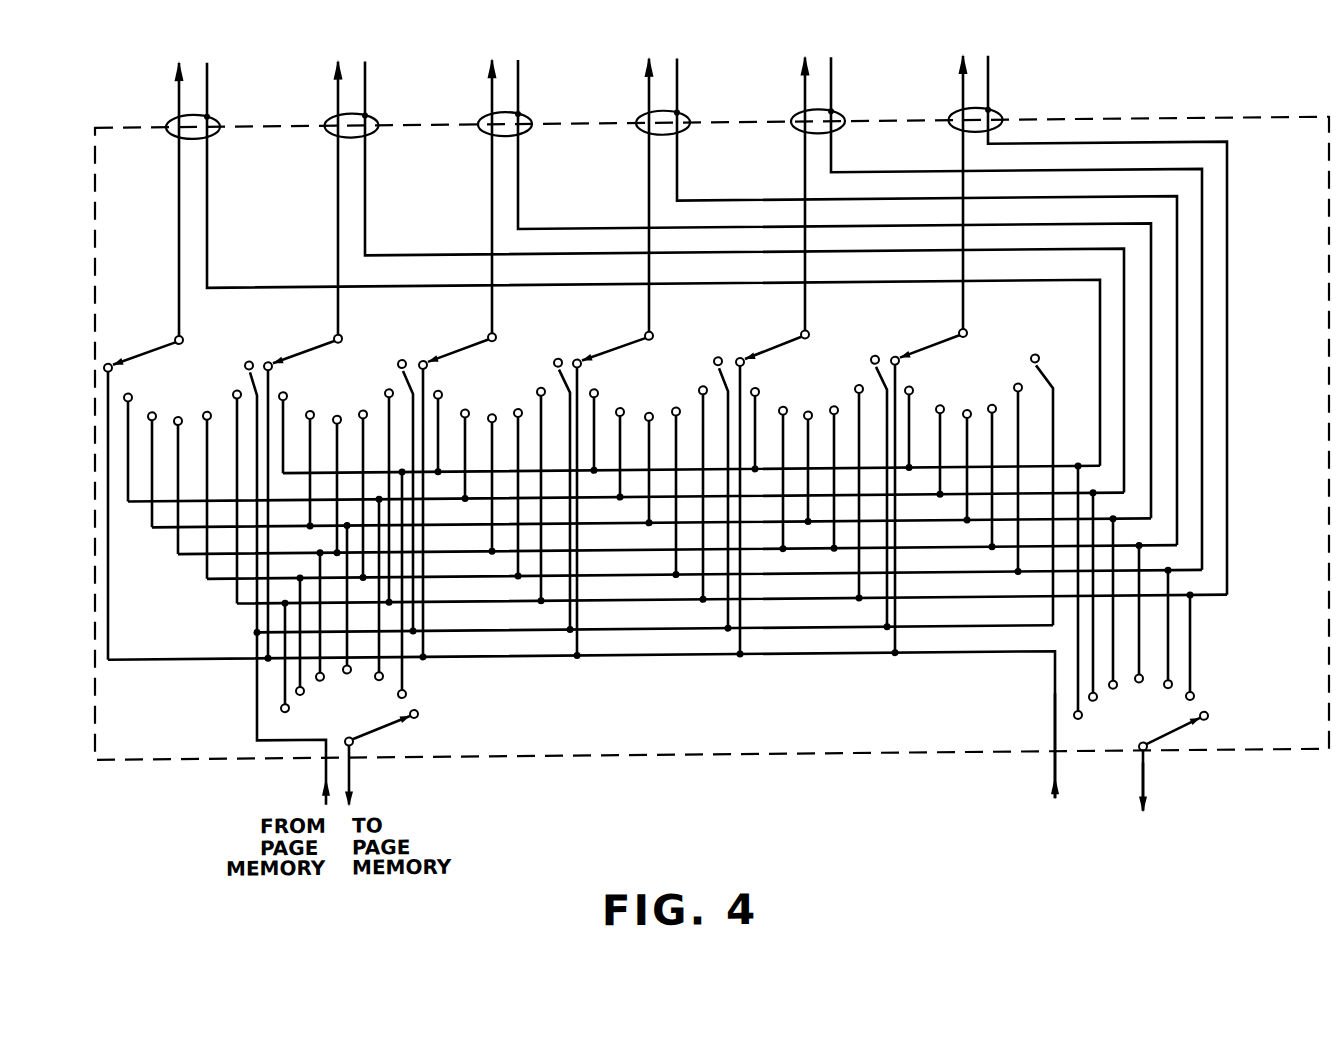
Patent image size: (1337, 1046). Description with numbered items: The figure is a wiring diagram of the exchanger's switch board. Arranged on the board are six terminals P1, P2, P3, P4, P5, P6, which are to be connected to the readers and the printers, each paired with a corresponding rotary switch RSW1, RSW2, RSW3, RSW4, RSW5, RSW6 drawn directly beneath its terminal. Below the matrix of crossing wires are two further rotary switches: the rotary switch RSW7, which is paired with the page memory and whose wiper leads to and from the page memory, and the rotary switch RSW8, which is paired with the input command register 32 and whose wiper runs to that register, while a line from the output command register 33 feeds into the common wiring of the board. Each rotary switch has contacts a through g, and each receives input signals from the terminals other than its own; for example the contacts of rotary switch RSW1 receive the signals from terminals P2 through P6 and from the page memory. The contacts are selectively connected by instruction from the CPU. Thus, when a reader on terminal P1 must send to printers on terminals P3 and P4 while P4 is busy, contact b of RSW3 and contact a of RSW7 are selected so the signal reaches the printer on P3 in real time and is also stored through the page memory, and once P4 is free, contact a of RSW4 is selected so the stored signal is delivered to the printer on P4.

The terminal P1 is at (1002, 123).
The terminal P2 is at (845, 123).
The terminal P3 is at (690, 123).
The terminal P4 is at (532, 123).
The terminal P5 is at (378, 123).
The terminal P6 is at (220, 123).
The rotary switch RSW1 is at (1001, 359).
The rotary switch RSW2 is at (846, 359).
The rotary switch RSW3 is at (664, 359).
The rotary switch RSW4 is at (510, 359).
The rotary switch RSW5 is at (355, 359).
The rotary switch RSW6 is at (195, 359).
The rotary switch RSW7 is at (432, 689).
The rotary switch RSW8 is at (1210, 702).
The input command register 32 is at (1198, 822).
The output command register 33 is at (1002, 789).